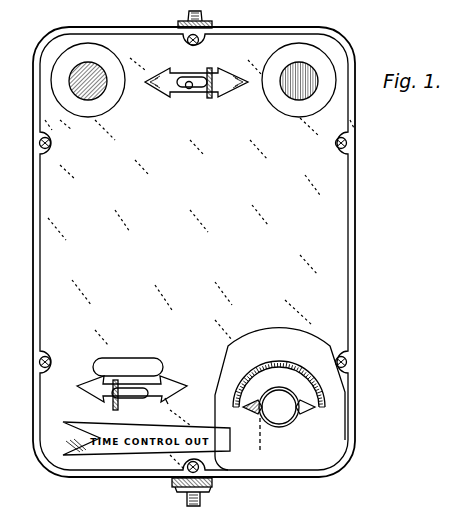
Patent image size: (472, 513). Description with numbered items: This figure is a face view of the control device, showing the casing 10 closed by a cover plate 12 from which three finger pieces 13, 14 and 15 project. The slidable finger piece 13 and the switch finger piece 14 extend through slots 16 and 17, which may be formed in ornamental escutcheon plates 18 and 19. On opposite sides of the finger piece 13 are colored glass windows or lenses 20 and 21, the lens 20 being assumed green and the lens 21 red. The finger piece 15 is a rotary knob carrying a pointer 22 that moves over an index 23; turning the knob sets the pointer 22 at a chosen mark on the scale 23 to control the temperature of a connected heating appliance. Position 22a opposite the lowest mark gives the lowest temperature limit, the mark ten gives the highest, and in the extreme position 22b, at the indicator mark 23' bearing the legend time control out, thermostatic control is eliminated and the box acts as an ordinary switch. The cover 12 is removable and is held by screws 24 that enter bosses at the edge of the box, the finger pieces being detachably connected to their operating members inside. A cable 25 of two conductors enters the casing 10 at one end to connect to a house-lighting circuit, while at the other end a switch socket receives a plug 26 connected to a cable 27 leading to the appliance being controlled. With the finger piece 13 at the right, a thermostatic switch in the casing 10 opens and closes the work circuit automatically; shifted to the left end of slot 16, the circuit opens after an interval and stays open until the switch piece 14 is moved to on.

The casing 10 is at (355, 268).
The cover plate 12 is at (333, 221).
The finger piece 13 is at (210, 98).
The finger piece 14 is at (117, 410).
The finger piece 15 is at (287, 417).
The slot 16 is at (189, 89).
The slot 17 is at (140, 399).
The escutcheon plate 18 is at (236, 90).
The escutcheon plate 19 is at (92, 382).
The lens 20 is at (100, 92).
The lens 21 is at (290, 90).
The pointer 22 is at (247, 403).
The pointer position 22a is at (308, 414).
The pointer position 22b is at (272, 442).
The index 23 is at (300, 398).
The indicator mark 23' is at (176, 412).
The screws 24 is at (51, 146).
The cable 25 is at (204, 18).
The plug 26 is at (213, 484).
The cable 27 is at (201, 499).